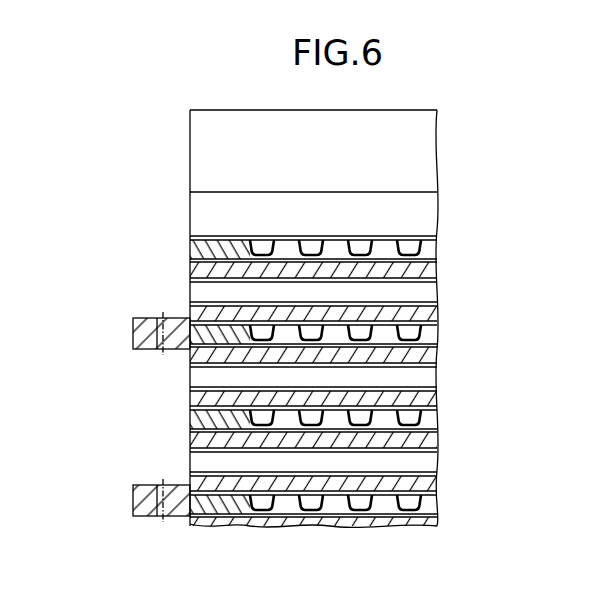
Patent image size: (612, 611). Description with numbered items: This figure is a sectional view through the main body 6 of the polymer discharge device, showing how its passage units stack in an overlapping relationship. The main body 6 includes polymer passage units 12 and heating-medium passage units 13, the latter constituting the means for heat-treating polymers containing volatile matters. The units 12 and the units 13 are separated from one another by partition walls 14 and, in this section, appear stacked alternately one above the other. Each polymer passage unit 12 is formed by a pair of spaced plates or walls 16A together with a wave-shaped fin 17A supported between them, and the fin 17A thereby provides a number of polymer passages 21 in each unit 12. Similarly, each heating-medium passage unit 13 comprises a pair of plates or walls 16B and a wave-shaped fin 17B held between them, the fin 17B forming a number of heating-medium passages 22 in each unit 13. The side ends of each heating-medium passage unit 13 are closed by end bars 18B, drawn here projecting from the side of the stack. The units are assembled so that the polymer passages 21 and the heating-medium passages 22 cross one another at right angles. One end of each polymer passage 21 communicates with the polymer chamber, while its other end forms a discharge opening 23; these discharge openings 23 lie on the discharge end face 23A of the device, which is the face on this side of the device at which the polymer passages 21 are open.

The main body 6 is at (446, 158).
The polymer passage unit 12 is at (459, 334).
The heating-medium passage unit 13 is at (333, 376).
The partition wall 14 is at (425, 272).
The plate or wall 16A is at (220, 300).
The plate or wall 16B is at (345, 407).
The wave-shaped fin 17A is at (372, 247).
The wave-shaped fin 17B is at (405, 252).
The end bar 18B is at (190, 249).
The polymer passage 21 is at (203, 292).
The heating-medium passage 22 is at (315, 247).
The discharge opening 23 is at (190, 291).
The discharge end face 23A is at (180, 445).